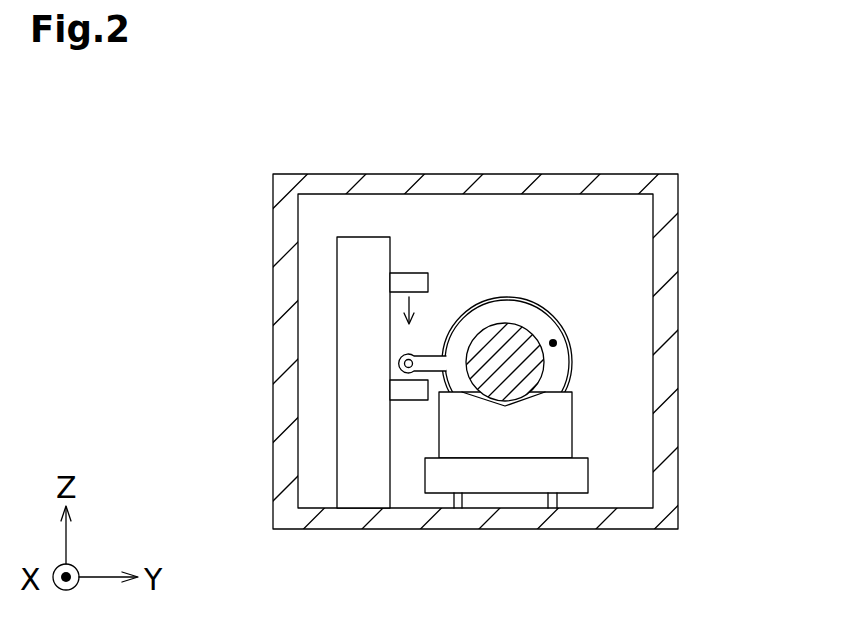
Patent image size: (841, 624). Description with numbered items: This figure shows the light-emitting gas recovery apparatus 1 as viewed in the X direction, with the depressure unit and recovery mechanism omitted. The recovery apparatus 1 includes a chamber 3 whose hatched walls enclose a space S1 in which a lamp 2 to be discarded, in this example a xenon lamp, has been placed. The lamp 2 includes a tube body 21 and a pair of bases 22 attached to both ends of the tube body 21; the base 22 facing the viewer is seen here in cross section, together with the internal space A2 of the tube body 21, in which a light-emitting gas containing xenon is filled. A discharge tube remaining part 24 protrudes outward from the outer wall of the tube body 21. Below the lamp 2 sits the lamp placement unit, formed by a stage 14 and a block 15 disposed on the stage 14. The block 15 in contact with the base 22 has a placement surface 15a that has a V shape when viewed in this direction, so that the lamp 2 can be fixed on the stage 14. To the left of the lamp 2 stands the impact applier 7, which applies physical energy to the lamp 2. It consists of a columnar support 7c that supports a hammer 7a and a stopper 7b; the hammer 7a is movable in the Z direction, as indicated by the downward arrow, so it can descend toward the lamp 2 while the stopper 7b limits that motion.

The recovery apparatus 1 is at (218, 124).
The lamp 2 is at (503, 256).
The chamber 3 is at (316, 530).
The impact applier 7 is at (299, 333).
The hammer 7a is at (397, 272).
The stopper 7b is at (403, 401).
The columnar support 7c is at (337, 332).
The stage 14 is at (588, 476).
The block 15 is at (503, 503).
The placement surface 15a is at (528, 395).
The tube body 21 is at (548, 310).
The base 22 is at (545, 364).
The discharge tube remaining part 24 is at (430, 356).
The internal space A2 is at (555, 341).
The space S1 is at (633, 239).